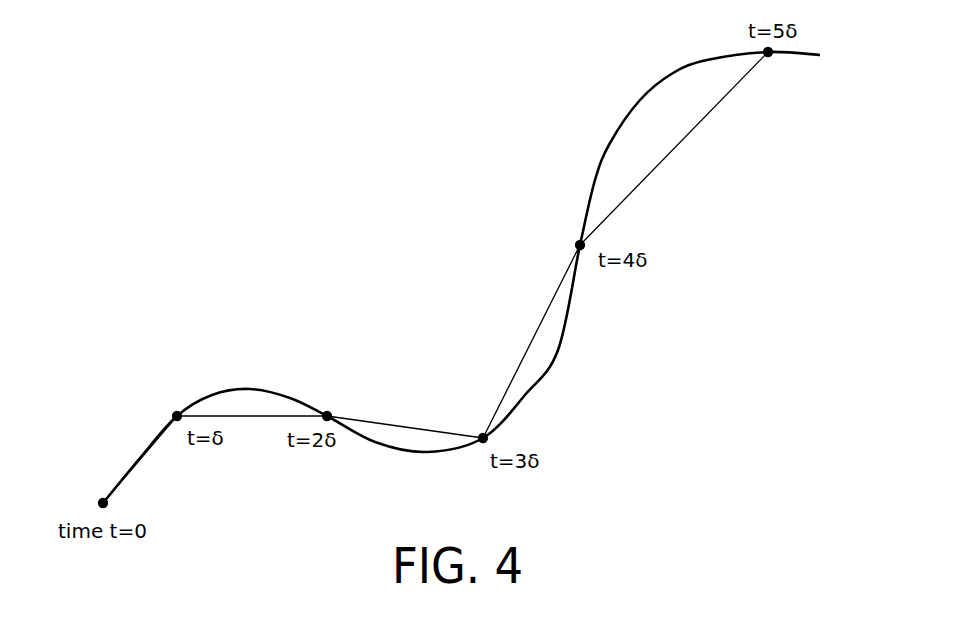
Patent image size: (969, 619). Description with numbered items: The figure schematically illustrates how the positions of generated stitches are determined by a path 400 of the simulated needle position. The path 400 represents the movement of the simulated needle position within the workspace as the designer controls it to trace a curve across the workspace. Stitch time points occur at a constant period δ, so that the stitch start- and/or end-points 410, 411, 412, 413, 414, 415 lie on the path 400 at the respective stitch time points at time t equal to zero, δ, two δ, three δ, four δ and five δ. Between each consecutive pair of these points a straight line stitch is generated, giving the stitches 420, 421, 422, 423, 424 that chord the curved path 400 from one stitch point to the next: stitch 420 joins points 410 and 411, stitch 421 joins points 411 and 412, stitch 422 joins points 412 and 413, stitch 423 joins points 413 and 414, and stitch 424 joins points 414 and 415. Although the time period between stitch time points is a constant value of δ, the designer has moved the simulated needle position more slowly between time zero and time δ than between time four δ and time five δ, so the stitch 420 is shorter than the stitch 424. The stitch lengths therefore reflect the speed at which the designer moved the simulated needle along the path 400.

The path 400 is at (263, 390).
The stitch start-point 410 is at (100, 500).
The stitch start- and/or end-point 411 is at (174, 414).
The stitch start- and/or end-point 412 is at (331, 413).
The stitch start- and/or end-point 413 is at (480, 435).
The stitch start- and/or end-point 414 is at (577, 243).
The stitch end-point 415 is at (771, 56).
The straight line stitch 420 is at (137, 465).
The straight line stitch 421 is at (263, 418).
The straight line stitch 422 is at (395, 425).
The straight line stitch 423 is at (535, 325).
The straight line stitch 424 is at (685, 138).